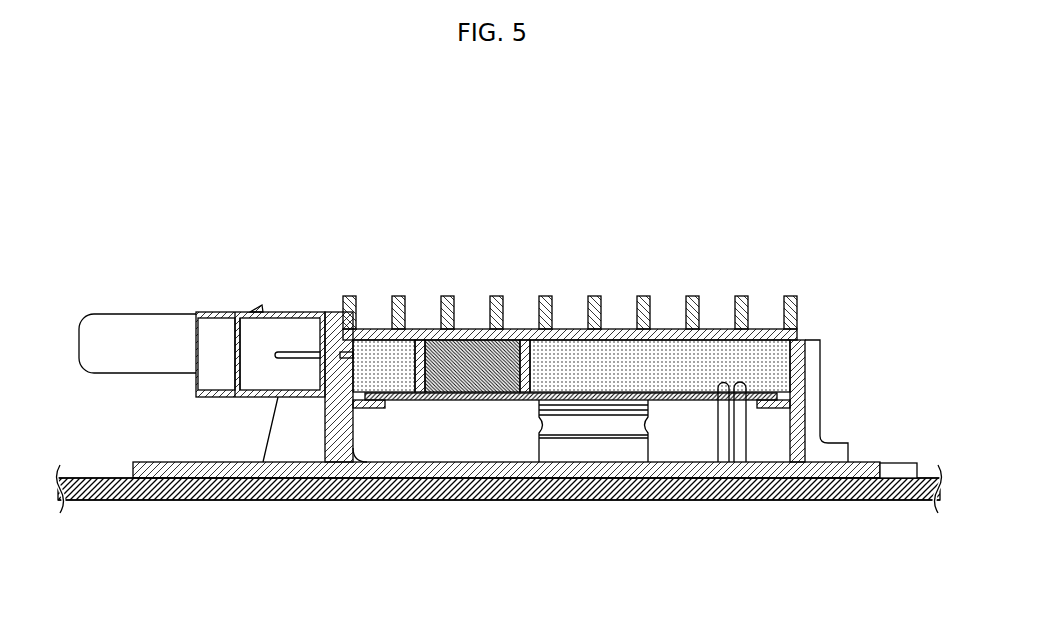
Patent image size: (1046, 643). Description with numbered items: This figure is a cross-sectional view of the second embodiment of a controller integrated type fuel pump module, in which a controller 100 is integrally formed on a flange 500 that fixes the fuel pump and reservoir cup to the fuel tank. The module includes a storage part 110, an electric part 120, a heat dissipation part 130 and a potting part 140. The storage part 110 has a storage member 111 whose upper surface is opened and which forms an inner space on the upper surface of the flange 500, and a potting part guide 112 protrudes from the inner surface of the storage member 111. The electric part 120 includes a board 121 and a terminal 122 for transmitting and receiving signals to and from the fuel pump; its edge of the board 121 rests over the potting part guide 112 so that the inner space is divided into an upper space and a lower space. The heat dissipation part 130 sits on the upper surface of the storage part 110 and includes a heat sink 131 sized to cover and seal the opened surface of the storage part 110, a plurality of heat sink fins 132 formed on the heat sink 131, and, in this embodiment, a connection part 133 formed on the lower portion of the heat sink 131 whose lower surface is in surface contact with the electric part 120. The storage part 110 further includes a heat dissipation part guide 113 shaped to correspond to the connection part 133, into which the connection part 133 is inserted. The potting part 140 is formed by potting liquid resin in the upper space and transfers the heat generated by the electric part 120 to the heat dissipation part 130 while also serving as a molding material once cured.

The controller 100 is at (318, 195).
The storage part 110 is at (880, 303).
The storage member 111 is at (801, 357).
The potting part guide 112 is at (793, 405).
The heat dissipation part guide 113 is at (530, 361).
The electric part 120 is at (610, 537).
The board 121 is at (693, 400).
The terminal 122 is at (725, 433).
The heat dissipation part 130 is at (482, 212).
The heat sink 131 is at (568, 329).
The heat sink fins 132 is at (543, 297).
The connection part 133 is at (468, 358).
The potting part 140 is at (398, 360).
The flange 500 is at (327, 500).